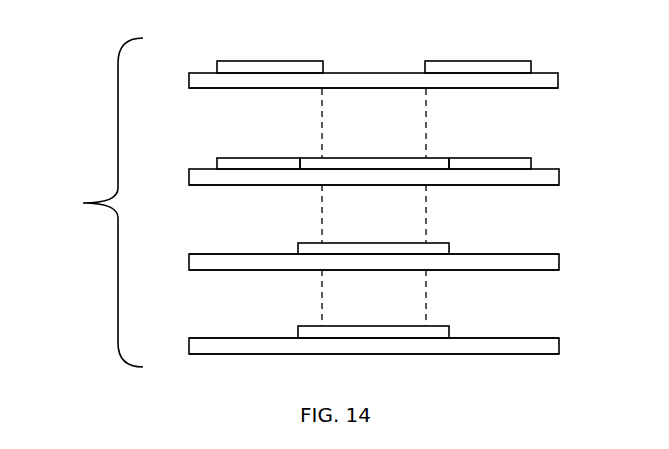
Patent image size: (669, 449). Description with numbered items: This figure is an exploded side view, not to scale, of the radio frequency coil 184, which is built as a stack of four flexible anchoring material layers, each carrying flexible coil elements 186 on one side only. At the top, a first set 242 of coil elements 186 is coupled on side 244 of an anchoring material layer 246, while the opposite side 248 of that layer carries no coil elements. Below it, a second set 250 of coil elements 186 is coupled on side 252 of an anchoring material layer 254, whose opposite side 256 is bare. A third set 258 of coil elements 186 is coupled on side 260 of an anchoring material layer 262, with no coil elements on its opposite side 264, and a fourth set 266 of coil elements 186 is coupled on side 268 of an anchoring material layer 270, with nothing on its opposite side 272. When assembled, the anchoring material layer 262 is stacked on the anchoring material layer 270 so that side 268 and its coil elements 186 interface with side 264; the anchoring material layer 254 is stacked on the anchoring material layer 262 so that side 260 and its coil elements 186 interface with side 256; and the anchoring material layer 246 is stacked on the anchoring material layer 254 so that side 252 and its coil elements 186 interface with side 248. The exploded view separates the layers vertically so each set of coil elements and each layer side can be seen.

The radio frequency coil 184 is at (86, 202).
The coil elements 186 is at (253, 61).
The first set of coil elements 242 is at (413, 79).
The side of anchoring material layer 244 is at (545, 70).
The anchoring material layer 246 is at (559, 80).
The opposite side of anchoring material layer 248 is at (546, 90).
The second set of coil elements 250 is at (397, 167).
The side of anchoring material layer 252 is at (547, 168).
The anchoring material layer 254 is at (559, 175).
The opposite side of anchoring material layer 256 is at (546, 186).
The third set of coil elements 258 is at (413, 258).
The side of anchoring material layer 260 is at (547, 255).
The anchoring material layer 262 is at (559, 262).
The opposite side of anchoring material layer 264 is at (546, 272).
The fourth set of coil elements 266 is at (413, 344).
The side of anchoring material layer 268 is at (548, 339).
The anchoring material layer 270 is at (559, 346).
The opposite side of anchoring material layer 272 is at (546, 356).